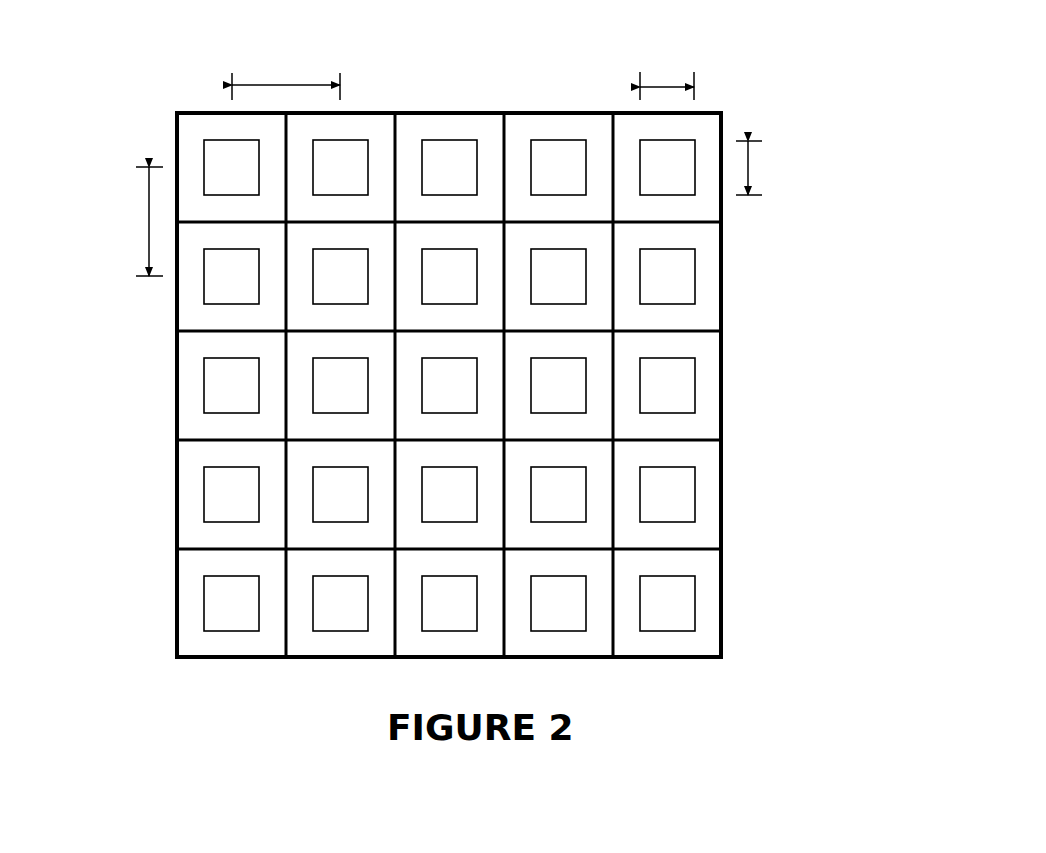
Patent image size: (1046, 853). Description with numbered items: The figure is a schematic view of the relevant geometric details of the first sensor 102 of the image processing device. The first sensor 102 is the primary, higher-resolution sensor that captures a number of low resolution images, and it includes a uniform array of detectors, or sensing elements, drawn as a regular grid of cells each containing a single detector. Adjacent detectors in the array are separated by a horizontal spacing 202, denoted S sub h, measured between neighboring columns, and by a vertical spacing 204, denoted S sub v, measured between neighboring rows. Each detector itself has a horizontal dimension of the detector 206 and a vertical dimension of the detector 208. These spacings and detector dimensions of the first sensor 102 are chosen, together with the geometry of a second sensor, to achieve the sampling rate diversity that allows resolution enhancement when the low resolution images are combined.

The first sensor 102 is at (670, 676).
The horizontal spacing 202 is at (285, 82).
The vertical spacing 204 is at (148, 222).
The horizontal dimension of the detector 206 is at (664, 82).
The vertical dimension of the detector 208 is at (750, 168).